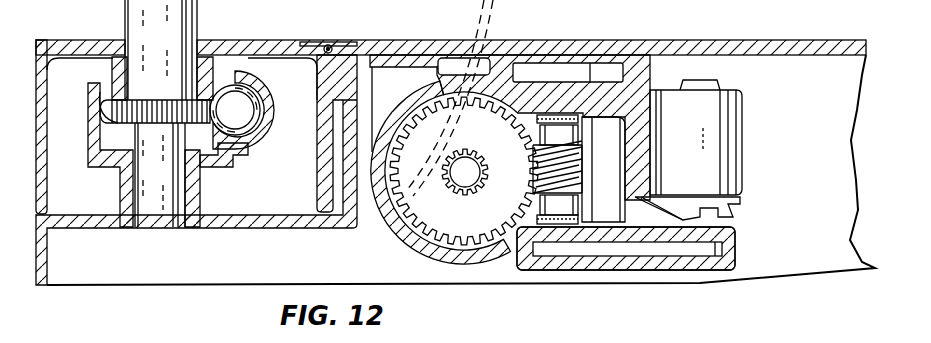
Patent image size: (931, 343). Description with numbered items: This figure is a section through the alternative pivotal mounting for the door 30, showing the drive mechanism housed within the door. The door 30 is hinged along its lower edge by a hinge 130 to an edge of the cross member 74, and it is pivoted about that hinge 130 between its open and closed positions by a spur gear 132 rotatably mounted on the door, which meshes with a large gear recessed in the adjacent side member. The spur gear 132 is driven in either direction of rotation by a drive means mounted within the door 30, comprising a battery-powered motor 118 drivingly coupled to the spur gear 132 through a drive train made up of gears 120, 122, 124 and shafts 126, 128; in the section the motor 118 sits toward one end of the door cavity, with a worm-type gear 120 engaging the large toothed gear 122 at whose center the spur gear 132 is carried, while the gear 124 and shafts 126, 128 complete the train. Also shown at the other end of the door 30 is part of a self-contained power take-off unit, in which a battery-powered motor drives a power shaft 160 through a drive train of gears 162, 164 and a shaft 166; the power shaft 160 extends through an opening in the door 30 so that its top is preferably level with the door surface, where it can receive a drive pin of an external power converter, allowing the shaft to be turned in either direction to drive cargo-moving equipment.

The door 30 is at (730, 43).
The cross member 74 is at (85, 50).
The power shaft 160 is at (182, 50).
The gear 162 is at (255, 100).
The gear 164 is at (100, 133).
The shaft 166 is at (243, 118).
The hinge 130 is at (331, 45).
The gear 122 is at (467, 96).
The spur gear 132 is at (467, 192).
The gear 120 is at (535, 170).
The shaft 128 is at (452, 158).
The battery-powered motor 118 is at (727, 142).
The shaft 126 is at (718, 213).
The gear 124 is at (657, 248).